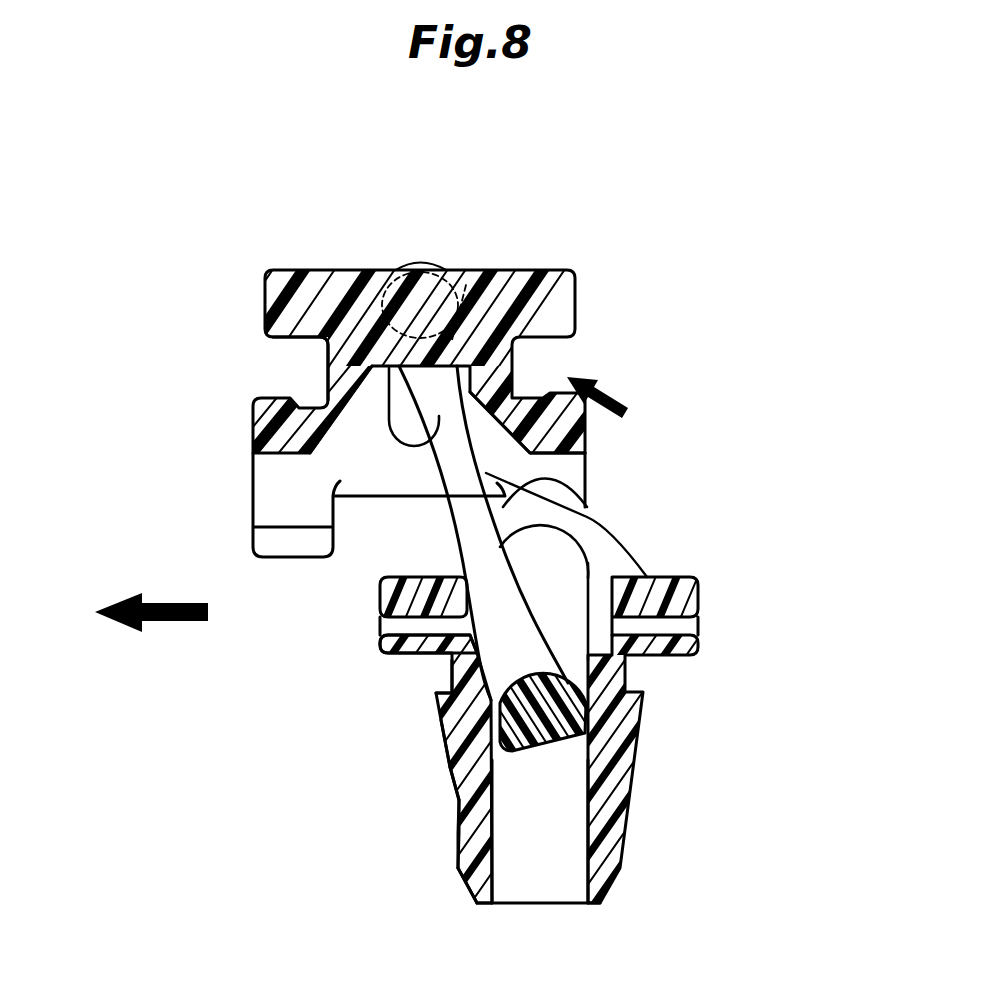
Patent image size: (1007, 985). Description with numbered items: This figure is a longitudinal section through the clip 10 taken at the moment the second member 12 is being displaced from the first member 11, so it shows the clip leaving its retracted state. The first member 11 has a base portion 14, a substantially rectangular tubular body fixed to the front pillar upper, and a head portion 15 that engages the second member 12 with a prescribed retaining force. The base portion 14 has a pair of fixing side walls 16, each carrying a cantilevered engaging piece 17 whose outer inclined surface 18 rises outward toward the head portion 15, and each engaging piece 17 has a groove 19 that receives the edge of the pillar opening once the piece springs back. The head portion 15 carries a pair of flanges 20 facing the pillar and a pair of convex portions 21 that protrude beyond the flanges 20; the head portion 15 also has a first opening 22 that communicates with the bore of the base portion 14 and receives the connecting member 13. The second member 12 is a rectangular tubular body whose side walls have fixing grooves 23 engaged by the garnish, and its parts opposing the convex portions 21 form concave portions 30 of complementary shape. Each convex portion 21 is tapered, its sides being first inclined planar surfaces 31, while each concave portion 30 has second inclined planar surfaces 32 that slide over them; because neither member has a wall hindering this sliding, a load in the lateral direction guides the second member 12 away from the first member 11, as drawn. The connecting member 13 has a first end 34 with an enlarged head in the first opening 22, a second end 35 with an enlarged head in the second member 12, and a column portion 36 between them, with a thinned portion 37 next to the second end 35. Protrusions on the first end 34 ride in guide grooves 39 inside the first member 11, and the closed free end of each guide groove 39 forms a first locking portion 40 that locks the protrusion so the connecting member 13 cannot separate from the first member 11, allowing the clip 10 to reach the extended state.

The clip 10 is at (590, 200).
The first member 11 is at (619, 898).
The second member 12 is at (590, 307).
The connecting member 13 is at (619, 577).
The base portion 14 is at (458, 872).
The head portion 15 is at (292, 576).
The fixing side wall 16 is at (472, 893).
The engaging piece 17 is at (447, 768).
The inclined surface 18 is at (446, 740).
The groove 19 is at (437, 693).
The flange 20 is at (400, 608).
The convex portion 21 is at (460, 545).
The first opening 22 is at (563, 491).
The fixing groove 23 is at (283, 341).
The concave portion 30 is at (287, 457).
The first inclined planar surface 31 is at (463, 552).
The second inclined planar surface 32 is at (340, 481).
The first end 34 is at (554, 738).
The second end 35 is at (425, 263).
The thinned portion 37 is at (466, 285).
The column portion 36 is at (510, 607).
The guide groove 39 is at (540, 885).
The first locking portion 40 is at (536, 584).